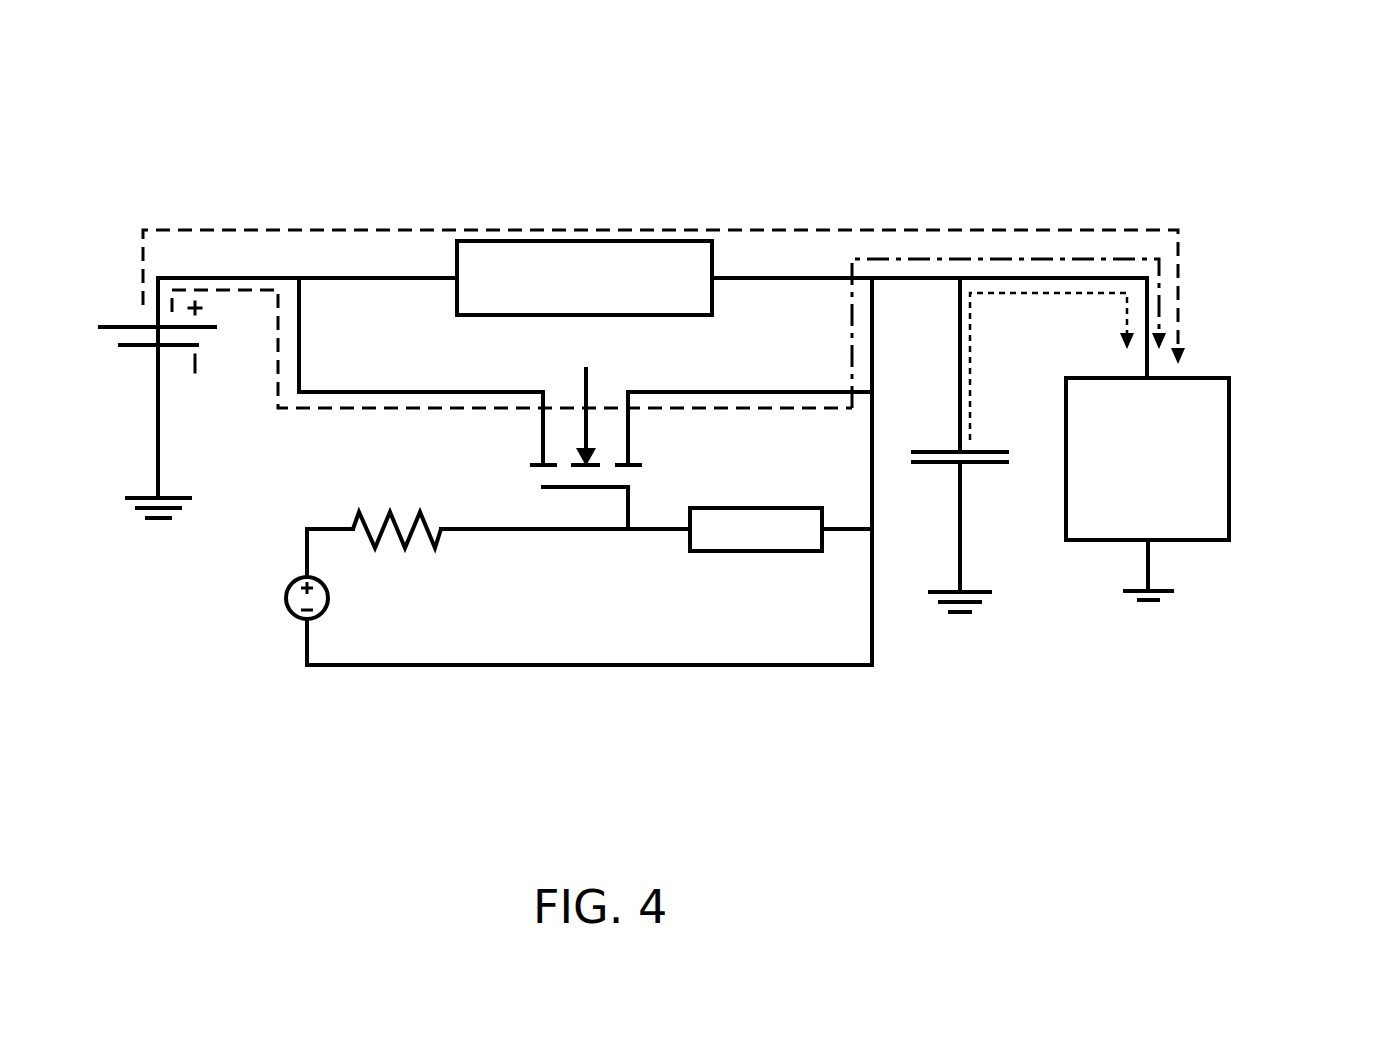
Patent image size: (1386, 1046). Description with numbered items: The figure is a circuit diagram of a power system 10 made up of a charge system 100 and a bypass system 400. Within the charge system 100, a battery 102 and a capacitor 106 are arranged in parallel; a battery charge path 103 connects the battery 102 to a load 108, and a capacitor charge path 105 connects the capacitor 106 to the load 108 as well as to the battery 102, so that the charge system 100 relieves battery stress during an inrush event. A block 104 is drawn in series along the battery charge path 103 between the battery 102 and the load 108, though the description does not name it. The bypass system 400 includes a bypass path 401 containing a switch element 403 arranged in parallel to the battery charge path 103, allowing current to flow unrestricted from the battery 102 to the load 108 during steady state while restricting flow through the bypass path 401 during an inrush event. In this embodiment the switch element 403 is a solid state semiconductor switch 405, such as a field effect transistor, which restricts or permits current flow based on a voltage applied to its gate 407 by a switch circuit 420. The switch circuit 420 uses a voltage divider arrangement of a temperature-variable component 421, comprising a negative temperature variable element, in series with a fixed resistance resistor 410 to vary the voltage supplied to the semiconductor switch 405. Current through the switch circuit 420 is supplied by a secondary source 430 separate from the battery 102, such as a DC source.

The power system 10 is at (257, 146).
The charge system 100 is at (851, 188).
The battery 102 is at (98, 323).
The battery charge path 103 is at (955, 230).
The power converter module 104 is at (553, 240).
The capacitor charge path 105 is at (970, 312).
The capacitor 106 is at (995, 463).
The load 108 is at (1229, 475).
The bypass system 400 is at (237, 546).
The bypass path 401 is at (380, 410).
The switch element 403 is at (640, 420).
The solid state semiconductor switch 405 is at (540, 418).
The gate 407 is at (555, 487).
The fixed resistance resistor 410 is at (357, 520).
The switch circuit 420 is at (861, 697).
The temperature-variable component 421 is at (745, 508).
The secondary source 430 is at (292, 612).